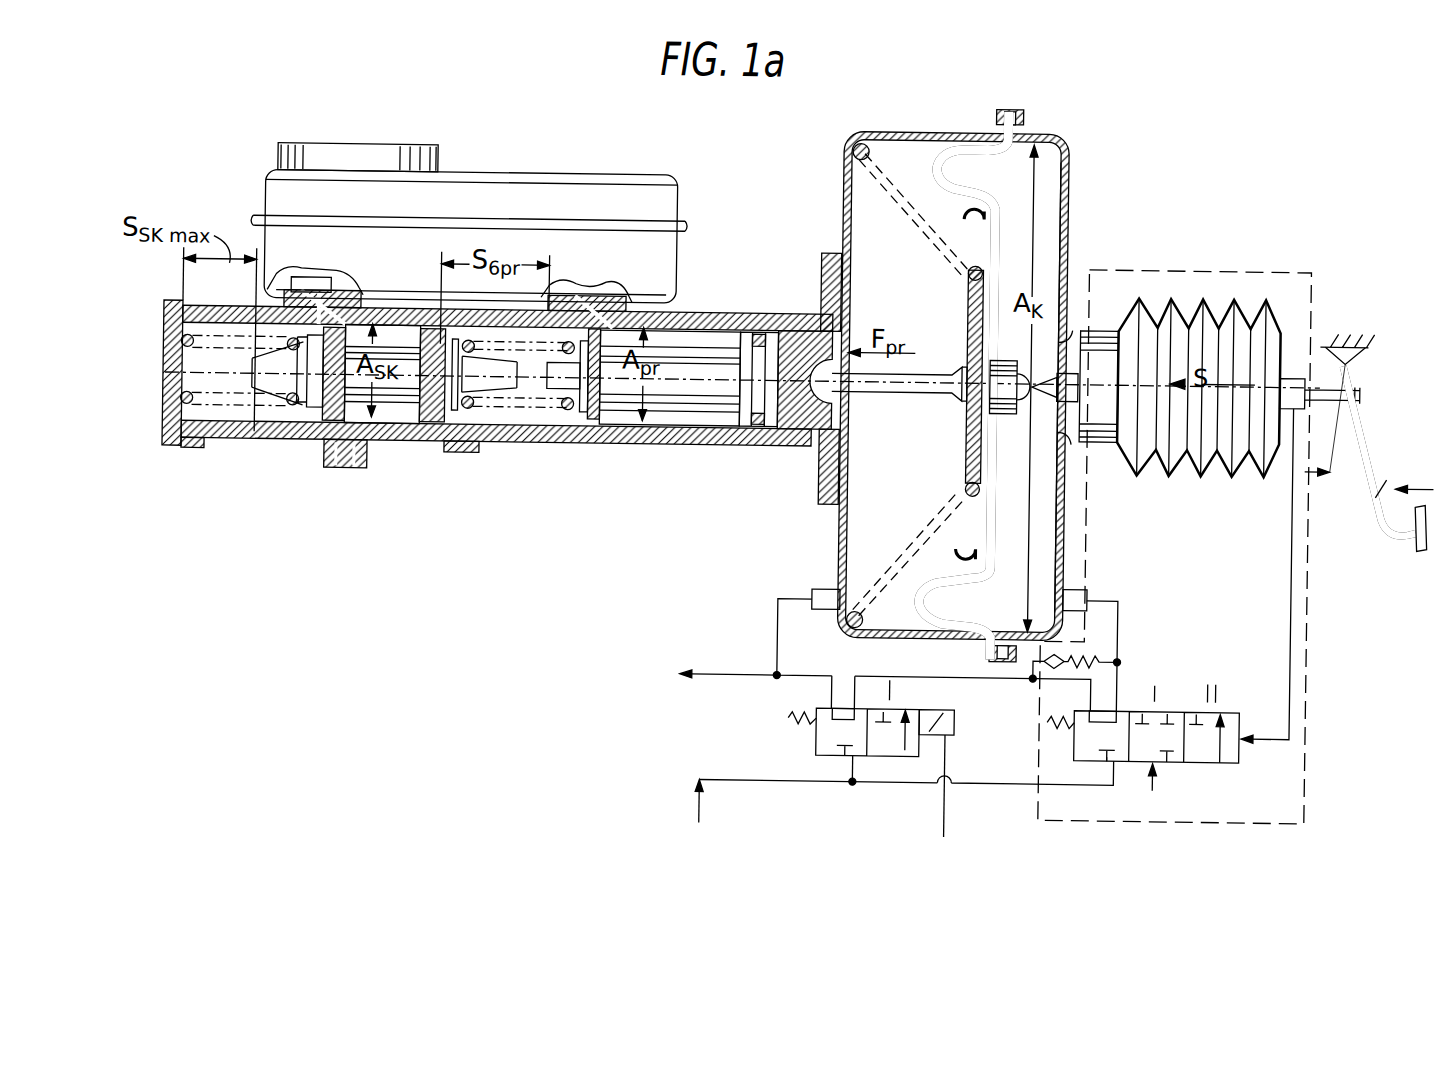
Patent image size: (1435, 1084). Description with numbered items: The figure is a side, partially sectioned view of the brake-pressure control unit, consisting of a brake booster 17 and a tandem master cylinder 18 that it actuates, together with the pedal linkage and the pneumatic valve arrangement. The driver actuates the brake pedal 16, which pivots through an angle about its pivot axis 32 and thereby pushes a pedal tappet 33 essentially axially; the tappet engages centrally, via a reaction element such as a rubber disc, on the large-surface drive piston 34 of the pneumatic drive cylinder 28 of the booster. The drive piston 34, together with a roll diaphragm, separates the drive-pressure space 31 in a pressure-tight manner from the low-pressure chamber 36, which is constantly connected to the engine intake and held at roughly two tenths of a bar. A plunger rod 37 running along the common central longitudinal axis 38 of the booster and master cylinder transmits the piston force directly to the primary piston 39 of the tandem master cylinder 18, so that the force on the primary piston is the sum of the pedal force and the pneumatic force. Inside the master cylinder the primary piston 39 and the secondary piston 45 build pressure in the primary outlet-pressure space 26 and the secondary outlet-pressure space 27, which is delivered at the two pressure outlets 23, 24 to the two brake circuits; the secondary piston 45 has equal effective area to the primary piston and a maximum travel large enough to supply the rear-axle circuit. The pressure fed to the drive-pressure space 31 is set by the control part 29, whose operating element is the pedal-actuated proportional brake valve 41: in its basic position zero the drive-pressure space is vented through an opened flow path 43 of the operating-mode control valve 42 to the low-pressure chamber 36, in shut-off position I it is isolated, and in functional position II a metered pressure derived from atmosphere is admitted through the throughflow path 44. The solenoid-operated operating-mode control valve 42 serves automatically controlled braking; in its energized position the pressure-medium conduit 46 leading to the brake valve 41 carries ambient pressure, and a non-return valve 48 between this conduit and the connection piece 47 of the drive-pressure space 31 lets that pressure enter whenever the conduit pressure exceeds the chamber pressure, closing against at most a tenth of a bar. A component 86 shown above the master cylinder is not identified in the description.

The brake pedal 16 is at (1381, 494).
The brake booster 17 is at (1068, 186).
The tandem master cylinder 18 is at (251, 440).
The pressure outlet 23 is at (464, 437).
The pressure outlet 24 is at (191, 440).
The primary outlet-pressure space 26 is at (540, 414).
The secondary outlet-pressure space 27 is at (282, 412).
The pneumatic drive cylinder 28 is at (877, 206).
The control part 29 is at (1310, 779).
The drive-pressure space 31 is at (1046, 226).
The pivot axis 32 is at (1356, 346).
The pedal tappet 33 is at (1062, 395).
The drive piston 34 is at (980, 229).
The low-pressure chamber 36 is at (866, 522).
The plunger rod 37 is at (929, 391).
The central longitudinal axis 38 is at (704, 376).
The primary piston 39 is at (660, 400).
The brake valve 41 is at (1149, 793).
The operating-mode control valve 42 is at (824, 737).
The flow path 43 is at (832, 714).
The throughflow path 44 is at (1220, 748).
The secondary piston 45 is at (393, 402).
The pressure-medium conduit 46 is at (962, 667).
The connection piece 47 is at (1093, 588).
The non-return valve 48 is at (1089, 648).
The brake fluid reservoir 86 is at (594, 167).